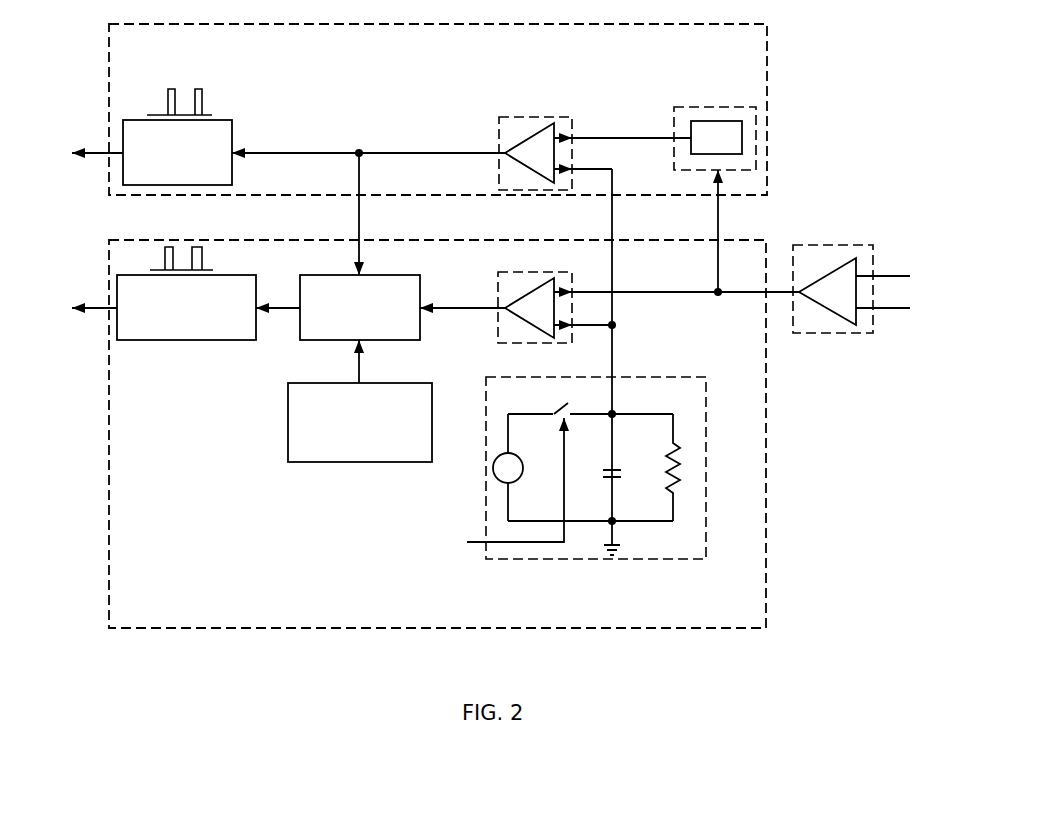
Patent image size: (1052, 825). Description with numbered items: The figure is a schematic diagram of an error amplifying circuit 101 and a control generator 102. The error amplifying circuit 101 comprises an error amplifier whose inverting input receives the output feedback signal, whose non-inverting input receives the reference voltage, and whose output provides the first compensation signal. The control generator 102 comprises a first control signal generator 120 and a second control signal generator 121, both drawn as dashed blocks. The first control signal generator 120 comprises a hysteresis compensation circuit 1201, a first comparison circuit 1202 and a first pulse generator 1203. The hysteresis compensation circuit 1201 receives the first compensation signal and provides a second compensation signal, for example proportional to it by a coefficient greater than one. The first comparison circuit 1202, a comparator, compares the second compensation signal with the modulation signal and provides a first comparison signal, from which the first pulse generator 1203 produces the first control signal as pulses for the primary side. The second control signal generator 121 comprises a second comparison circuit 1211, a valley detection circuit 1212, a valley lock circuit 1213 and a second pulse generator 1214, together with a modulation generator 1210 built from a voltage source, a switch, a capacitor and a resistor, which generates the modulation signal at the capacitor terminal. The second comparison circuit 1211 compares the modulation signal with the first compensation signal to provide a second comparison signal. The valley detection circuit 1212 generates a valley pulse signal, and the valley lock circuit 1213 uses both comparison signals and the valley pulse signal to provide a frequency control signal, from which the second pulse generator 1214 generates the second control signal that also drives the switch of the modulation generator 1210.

The error amplifying circuit 101 is at (860, 245).
The control generator 102 is at (108, 270).
The first control signal generator 120 is at (172, 63).
The second control signal generator 121 is at (180, 611).
The hysteresis compensation circuit 1201 is at (716, 107).
The first comparison circuit 1202 is at (541, 100).
The first pulse generator 1203 is at (247, 110).
The modulation generator 1210 is at (525, 559).
The second comparison circuit 1211 is at (498, 326).
The valley detection circuit 1212 is at (327, 462).
The valley lock circuit 1213 is at (320, 340).
The second pulse generator 1214 is at (178, 340).